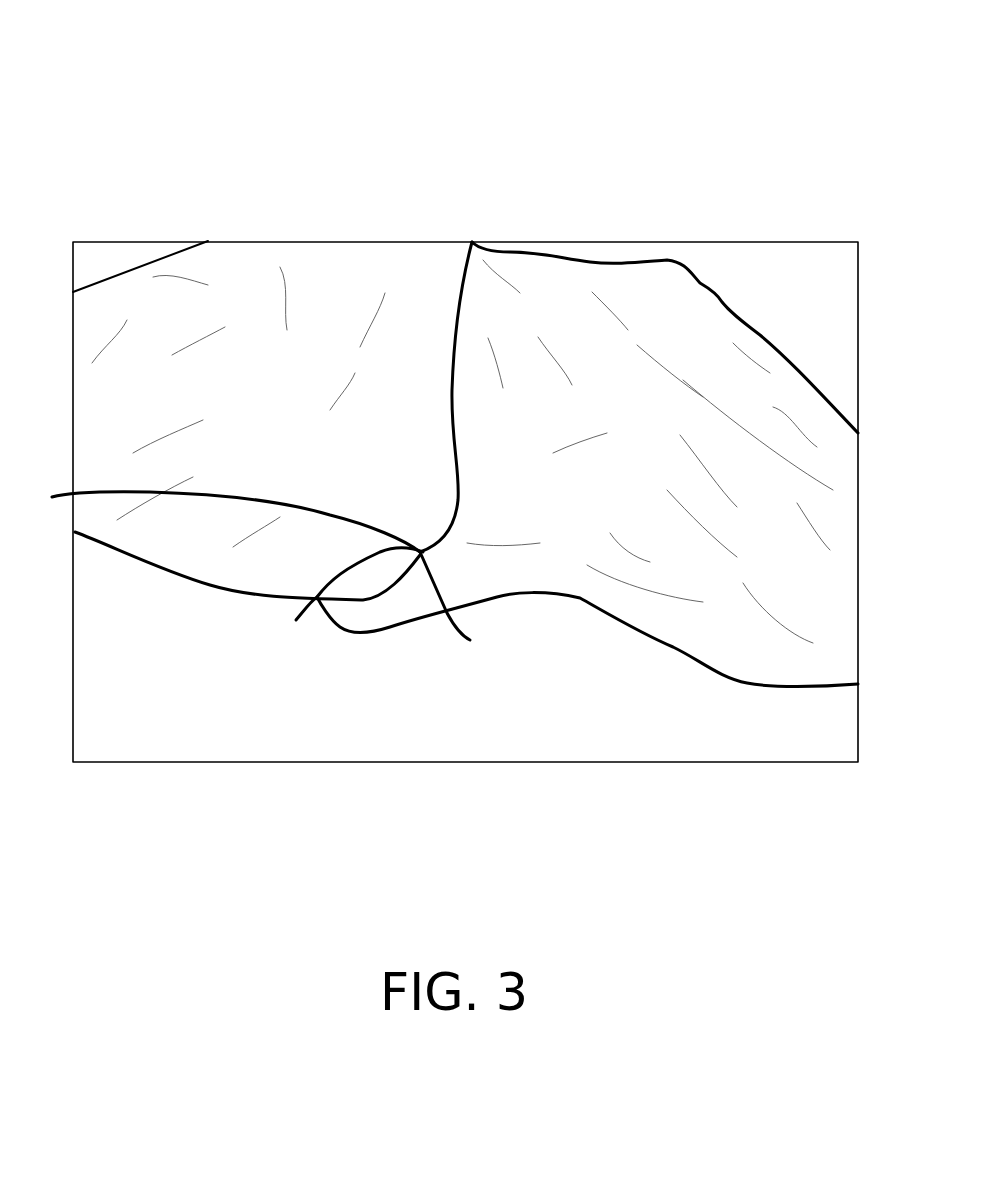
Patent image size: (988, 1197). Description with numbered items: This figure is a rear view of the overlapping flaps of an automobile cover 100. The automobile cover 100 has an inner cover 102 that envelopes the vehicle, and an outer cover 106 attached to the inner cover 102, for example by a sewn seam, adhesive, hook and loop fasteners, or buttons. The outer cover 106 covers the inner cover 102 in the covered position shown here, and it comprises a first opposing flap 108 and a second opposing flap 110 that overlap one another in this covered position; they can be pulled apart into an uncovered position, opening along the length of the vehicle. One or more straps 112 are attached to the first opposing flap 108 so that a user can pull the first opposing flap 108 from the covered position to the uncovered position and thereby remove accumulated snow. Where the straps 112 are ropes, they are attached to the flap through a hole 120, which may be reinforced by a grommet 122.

The automobile cover 100 is at (137, 72).
The inner cover 102 is at (465, 712).
The outer cover 106 is at (398, 378).
The first opposing flap 108 is at (217, 320).
The second opposing flap 110 is at (640, 425).
The straps 112 is at (95, 492).
The hole 120 is at (296, 620).
The grommet 122 is at (470, 640).